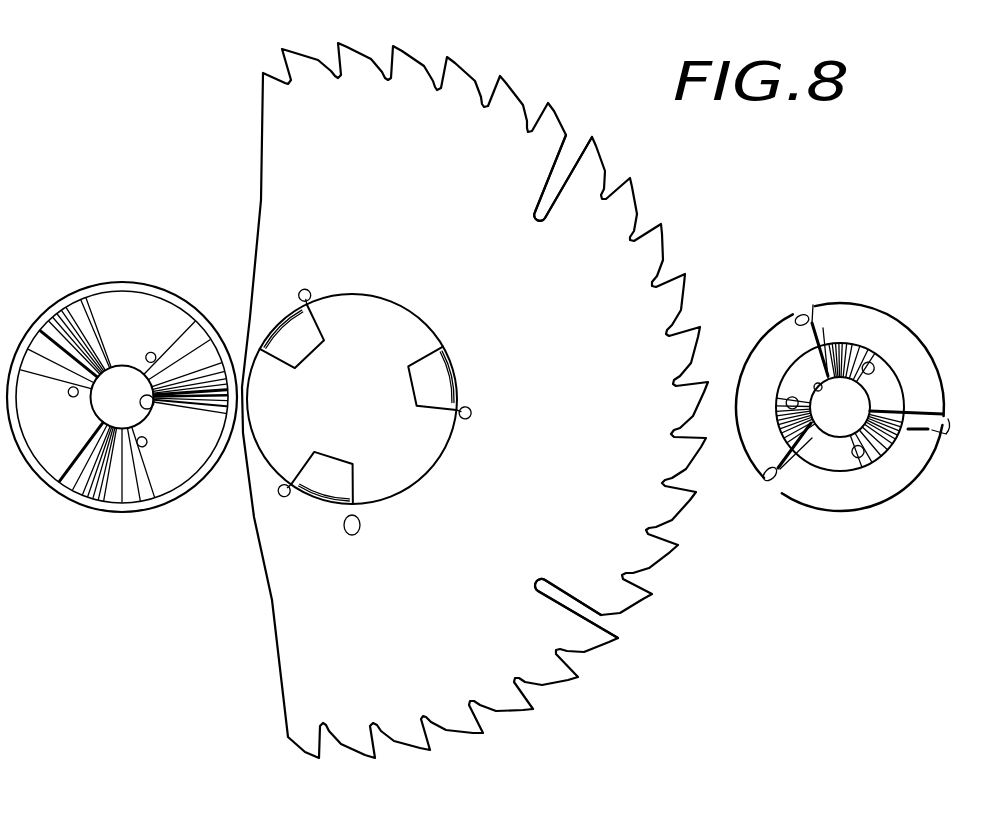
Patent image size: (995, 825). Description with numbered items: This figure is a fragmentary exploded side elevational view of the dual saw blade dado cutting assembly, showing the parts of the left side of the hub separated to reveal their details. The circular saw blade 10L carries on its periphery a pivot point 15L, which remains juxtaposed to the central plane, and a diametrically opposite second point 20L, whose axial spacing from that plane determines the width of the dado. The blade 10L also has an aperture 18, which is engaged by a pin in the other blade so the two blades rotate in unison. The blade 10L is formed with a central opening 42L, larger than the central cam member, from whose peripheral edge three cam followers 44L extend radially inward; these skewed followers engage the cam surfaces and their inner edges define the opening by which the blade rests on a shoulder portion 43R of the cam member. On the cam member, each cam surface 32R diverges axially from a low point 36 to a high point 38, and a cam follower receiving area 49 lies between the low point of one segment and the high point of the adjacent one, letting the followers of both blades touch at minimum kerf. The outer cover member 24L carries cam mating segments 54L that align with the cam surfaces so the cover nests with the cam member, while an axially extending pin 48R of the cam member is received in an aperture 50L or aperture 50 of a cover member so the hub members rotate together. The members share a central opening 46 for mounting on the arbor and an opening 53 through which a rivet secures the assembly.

The circular saw blade 10L is at (475, 407).
The second point 20L is at (336, 42).
The pivot point 15L is at (372, 760).
The outer cover member 24L is at (122, 396).
The cam mating segments 54L is at (124, 400).
The aperture 50L is at (137, 339).
The aperture 50 is at (56, 411).
The central opening 46 is at (152, 407).
The opening 53 is at (146, 442).
The central opening 42L is at (364, 402).
The cam followers 44L is at (361, 402).
The aperture 18 is at (348, 532).
The cam surface 32R is at (821, 424).
The high point 38 is at (839, 421).
The low point 36 is at (825, 392).
The cam follower receiving area 49 is at (851, 406).
The shoulder portion 43R is at (807, 429).
The axially extending pin 48R is at (822, 370).